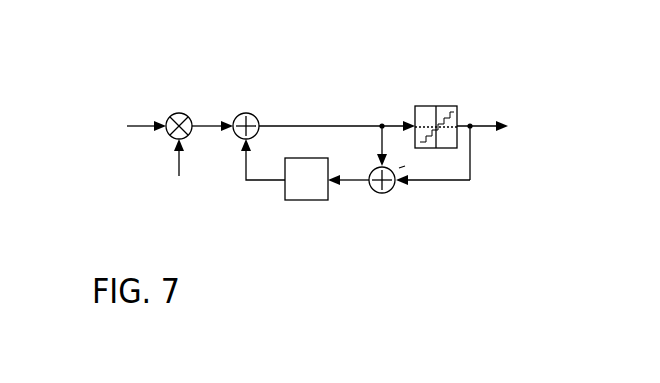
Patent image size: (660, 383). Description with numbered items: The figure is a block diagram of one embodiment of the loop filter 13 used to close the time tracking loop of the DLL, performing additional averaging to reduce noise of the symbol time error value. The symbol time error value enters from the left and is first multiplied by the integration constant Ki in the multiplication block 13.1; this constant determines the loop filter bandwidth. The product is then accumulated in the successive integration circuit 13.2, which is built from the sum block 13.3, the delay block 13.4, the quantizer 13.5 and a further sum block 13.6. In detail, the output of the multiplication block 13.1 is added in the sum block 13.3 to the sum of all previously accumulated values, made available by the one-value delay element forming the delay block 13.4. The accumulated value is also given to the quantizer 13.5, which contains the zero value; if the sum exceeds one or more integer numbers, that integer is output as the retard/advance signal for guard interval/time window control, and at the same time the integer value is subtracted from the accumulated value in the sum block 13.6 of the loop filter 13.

The loop filter 13 is at (342, 37).
The multiplication block 13.1 is at (183, 113).
The integration circuit 13.2 is at (349, 150).
The sum block 13.3 is at (246, 113).
The delay block 13.4 is at (293, 200).
The quantizer 13.5 is at (440, 106).
The sum block 13.6 is at (384, 193).